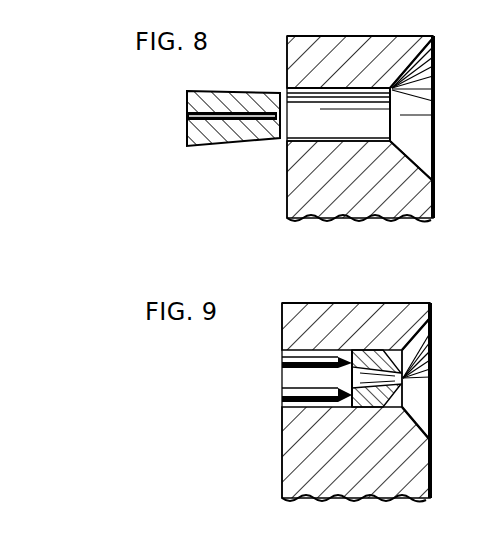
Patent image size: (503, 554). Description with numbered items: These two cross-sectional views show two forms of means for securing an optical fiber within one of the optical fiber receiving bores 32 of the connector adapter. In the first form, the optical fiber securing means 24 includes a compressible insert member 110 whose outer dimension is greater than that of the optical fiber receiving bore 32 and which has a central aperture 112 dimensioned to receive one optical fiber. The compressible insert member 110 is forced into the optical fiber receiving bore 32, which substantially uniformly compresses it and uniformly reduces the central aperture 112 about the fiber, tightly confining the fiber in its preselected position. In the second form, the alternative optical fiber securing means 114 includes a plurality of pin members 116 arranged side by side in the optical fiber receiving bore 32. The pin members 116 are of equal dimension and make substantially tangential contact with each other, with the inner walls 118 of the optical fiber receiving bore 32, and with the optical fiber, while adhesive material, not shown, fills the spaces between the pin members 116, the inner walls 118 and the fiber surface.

In FIG. 8, the optical fiber securing means 24 is at (258, 168).
In FIG. 8, the optical fiber receiving bore 32 is at (358, 88).
In FIG. 9, the optical fiber receiving bore 32 is at (330, 405).
In FIG. 8, the compressible insert member 110 is at (214, 145).
In FIG. 8, the central aperture 112 is at (229, 108).
In FIG. 9, the alternative optical fiber securing means 114 is at (275, 378).
In FIG. 9, the pin member 116 is at (311, 352).
In FIG. 9, the inner wall 118 is at (347, 350).